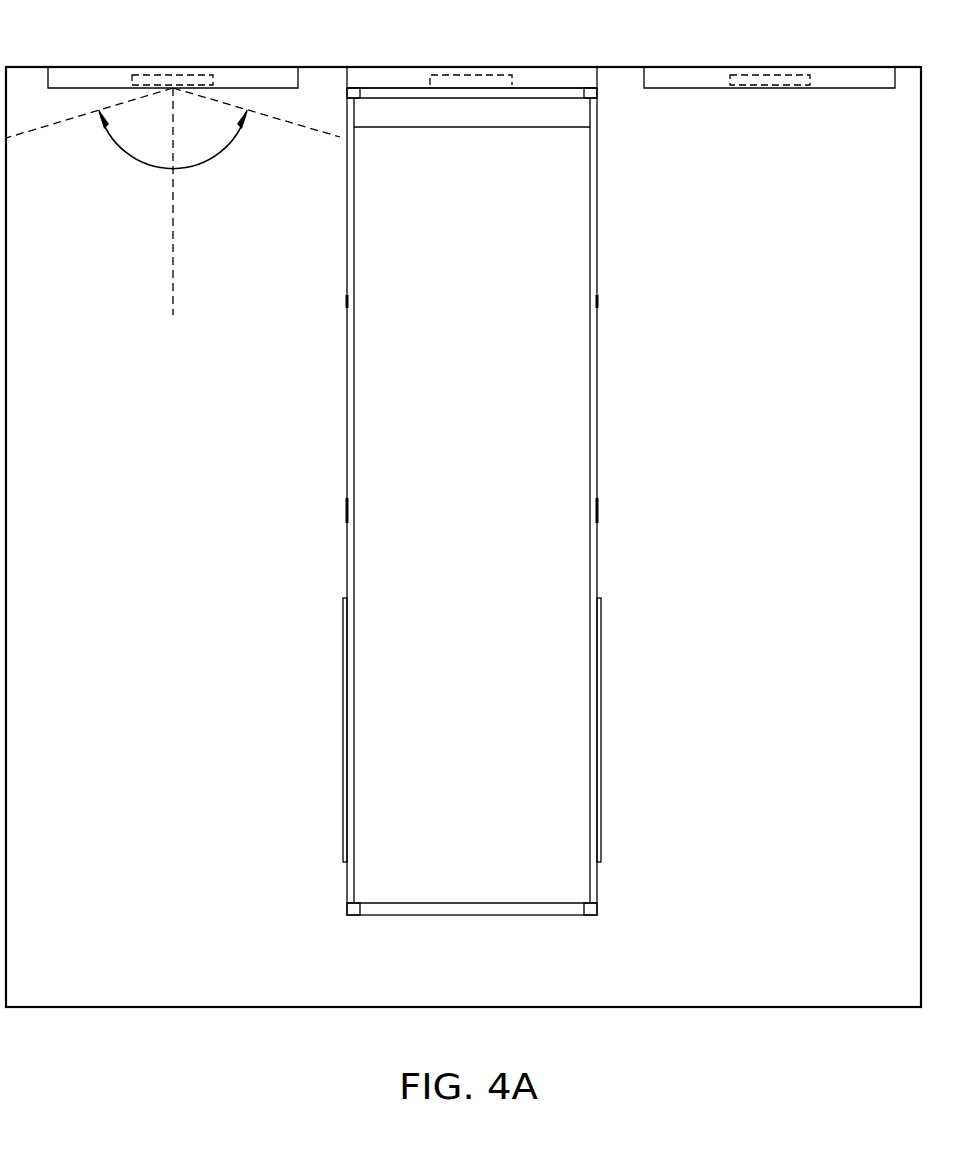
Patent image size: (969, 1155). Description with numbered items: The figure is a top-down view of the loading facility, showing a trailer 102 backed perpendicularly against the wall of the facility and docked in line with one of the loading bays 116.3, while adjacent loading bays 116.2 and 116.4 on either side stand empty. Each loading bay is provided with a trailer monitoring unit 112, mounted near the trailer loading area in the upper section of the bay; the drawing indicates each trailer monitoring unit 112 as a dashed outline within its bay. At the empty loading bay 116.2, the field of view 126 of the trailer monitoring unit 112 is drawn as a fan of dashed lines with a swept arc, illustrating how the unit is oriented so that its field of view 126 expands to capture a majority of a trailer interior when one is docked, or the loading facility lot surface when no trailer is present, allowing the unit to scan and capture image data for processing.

The trailer 102 is at (383, 468).
The trailer monitoring unit 112 is at (173, 70).
The light fixture 116.2 is at (92, 57).
The light fixture 116.3 is at (427, 58).
The light fixture 116.4 is at (727, 57).
The field of view 126 is at (200, 162).